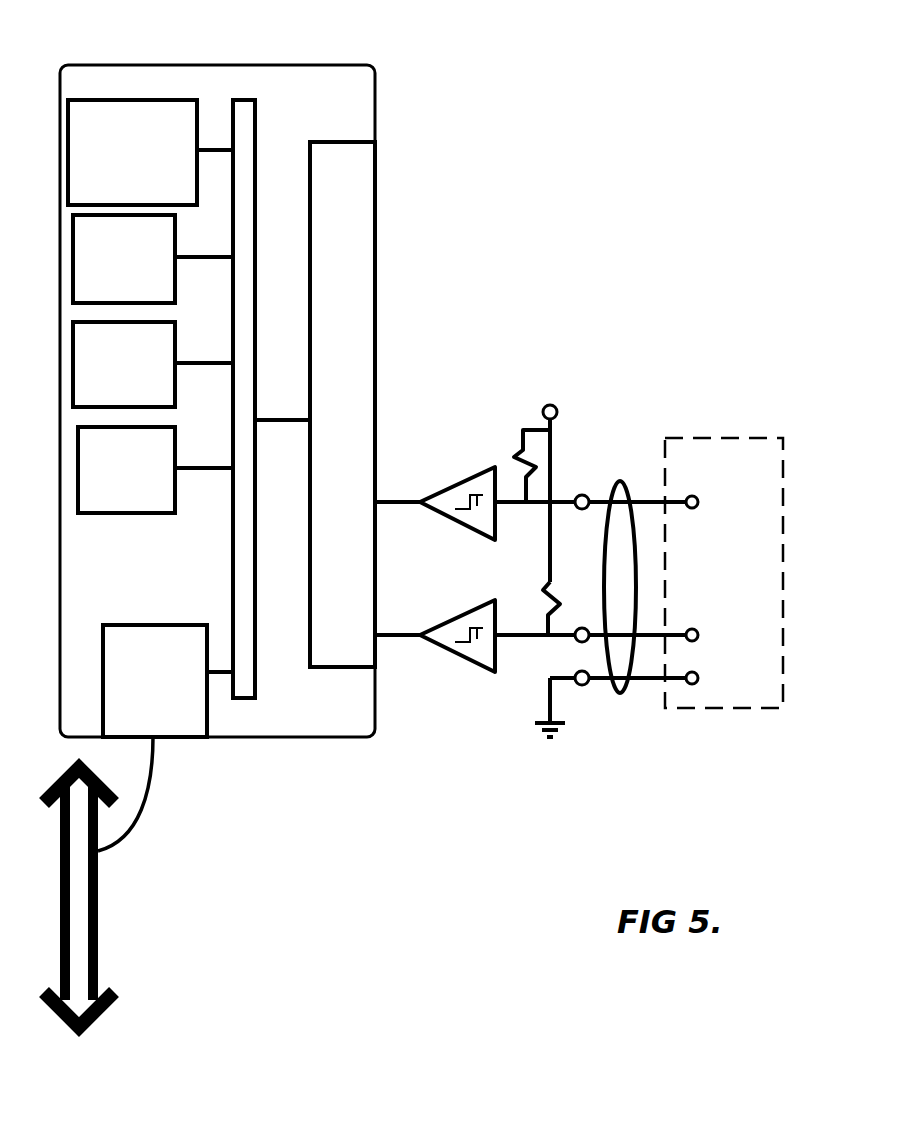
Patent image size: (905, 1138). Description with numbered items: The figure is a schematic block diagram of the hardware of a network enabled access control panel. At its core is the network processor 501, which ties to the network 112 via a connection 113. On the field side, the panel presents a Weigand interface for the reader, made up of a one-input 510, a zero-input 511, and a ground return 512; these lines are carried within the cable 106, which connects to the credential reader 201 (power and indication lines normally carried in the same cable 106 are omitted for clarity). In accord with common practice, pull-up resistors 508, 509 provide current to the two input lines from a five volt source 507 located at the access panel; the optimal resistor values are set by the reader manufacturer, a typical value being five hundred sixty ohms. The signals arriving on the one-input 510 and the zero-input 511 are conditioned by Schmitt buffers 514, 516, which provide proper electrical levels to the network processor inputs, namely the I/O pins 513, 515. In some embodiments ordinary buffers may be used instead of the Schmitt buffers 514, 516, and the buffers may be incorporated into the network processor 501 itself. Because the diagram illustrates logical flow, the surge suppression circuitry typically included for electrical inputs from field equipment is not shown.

The network processor 501 is at (208, 52).
The network 112 is at (98, 945).
The connection 113 is at (152, 765).
The cable 106 is at (638, 468).
The credential reader 201 is at (695, 708).
The voltage source 507 is at (550, 405).
The pull-up resistor 508 is at (514, 457).
The pull-up resistor 509 is at (543, 592).
The "1" input 510 is at (582, 494).
The "0" input 511 is at (580, 643).
The ground return 512 is at (582, 686).
The I/O pin 513 is at (400, 501).
The input buffer 514 is at (470, 530).
The I/O pin 515 is at (400, 634).
The input buffer 516 is at (470, 667).